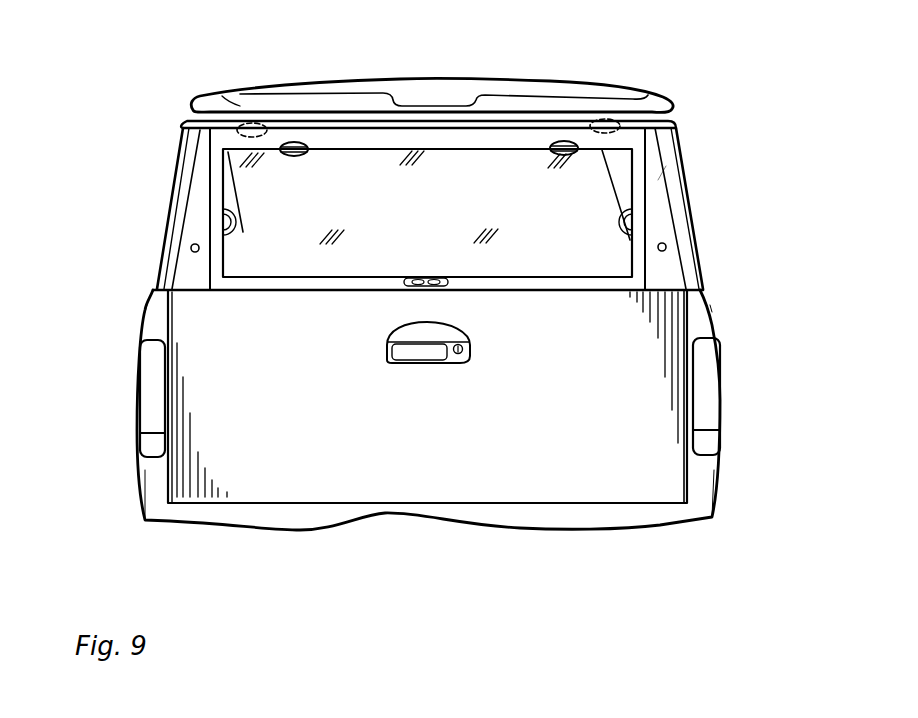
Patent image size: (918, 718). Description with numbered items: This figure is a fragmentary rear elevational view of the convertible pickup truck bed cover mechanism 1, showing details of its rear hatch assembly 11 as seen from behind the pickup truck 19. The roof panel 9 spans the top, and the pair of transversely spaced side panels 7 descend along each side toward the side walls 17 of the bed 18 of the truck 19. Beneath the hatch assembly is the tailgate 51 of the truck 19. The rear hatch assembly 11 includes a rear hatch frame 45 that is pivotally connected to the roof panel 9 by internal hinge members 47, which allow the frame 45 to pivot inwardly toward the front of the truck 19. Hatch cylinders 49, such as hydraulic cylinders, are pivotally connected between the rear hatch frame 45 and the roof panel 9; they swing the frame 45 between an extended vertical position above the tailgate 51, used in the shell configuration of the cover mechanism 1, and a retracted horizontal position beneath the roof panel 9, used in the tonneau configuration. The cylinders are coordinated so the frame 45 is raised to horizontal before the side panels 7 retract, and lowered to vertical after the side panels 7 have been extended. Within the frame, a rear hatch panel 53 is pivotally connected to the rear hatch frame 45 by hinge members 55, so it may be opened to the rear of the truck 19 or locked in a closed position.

The convertible pickup truck bed cover mechanism 1 is at (188, 68).
The roof panel 9 is at (515, 108).
The internal hinge members 47 is at (637, 120).
The rear hatch assembly 11 is at (657, 180).
The rear hatch frame 45 is at (660, 227).
The side panels 7 is at (688, 262).
The rear hatch panel 53 is at (513, 250).
The hatch cylinders 49 is at (238, 188).
The hinge members 55 is at (297, 157).
The tailgate 51 is at (432, 487).
The pickup truck 19 is at (143, 327).
The bed 18 is at (715, 328).
The side walls 17 is at (153, 478).